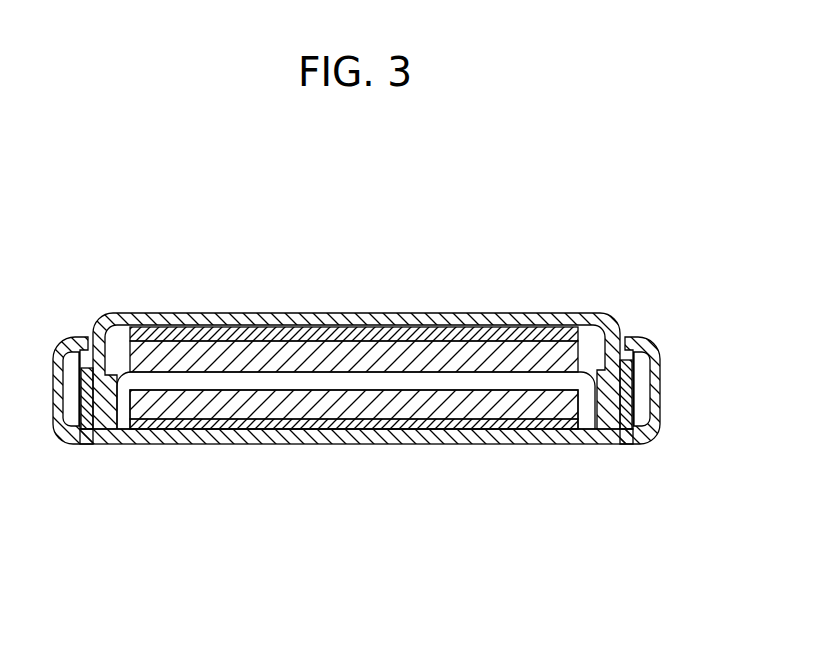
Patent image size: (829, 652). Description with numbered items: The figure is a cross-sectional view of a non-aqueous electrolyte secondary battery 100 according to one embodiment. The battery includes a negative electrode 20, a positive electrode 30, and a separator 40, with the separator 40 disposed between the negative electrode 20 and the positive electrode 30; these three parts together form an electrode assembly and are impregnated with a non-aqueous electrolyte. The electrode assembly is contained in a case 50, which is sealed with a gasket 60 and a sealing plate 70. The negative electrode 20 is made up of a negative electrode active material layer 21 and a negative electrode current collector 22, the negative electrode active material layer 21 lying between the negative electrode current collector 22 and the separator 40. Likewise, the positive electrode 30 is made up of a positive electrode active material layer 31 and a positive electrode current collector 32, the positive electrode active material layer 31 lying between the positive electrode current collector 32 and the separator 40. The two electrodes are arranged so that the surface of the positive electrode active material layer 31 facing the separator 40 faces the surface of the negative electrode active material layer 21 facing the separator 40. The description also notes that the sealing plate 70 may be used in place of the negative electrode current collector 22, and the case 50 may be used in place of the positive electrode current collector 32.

The non-aqueous electrolyte secondary battery 100 is at (505, 177).
The negative electrode 20 is at (353, 228).
The negative electrode active material layer 21 is at (245, 355).
The negative electrode current collector 22 is at (330, 338).
The positive electrode 30 is at (502, 543).
The positive electrode active material layer 31 is at (496, 410).
The positive electrode current collector 32 is at (384, 430).
The separator 40 is at (536, 385).
The case 50 is at (177, 437).
The gasket 60 is at (633, 445).
The sealing plate 70 is at (136, 331).